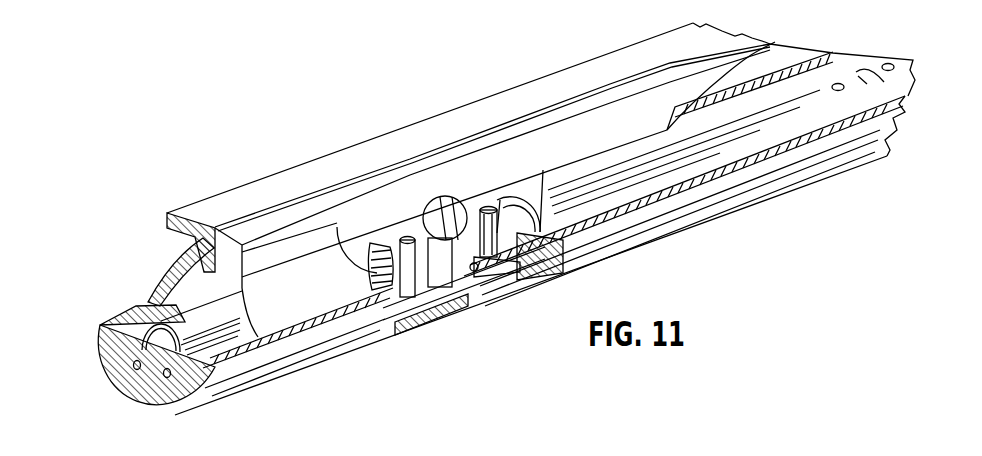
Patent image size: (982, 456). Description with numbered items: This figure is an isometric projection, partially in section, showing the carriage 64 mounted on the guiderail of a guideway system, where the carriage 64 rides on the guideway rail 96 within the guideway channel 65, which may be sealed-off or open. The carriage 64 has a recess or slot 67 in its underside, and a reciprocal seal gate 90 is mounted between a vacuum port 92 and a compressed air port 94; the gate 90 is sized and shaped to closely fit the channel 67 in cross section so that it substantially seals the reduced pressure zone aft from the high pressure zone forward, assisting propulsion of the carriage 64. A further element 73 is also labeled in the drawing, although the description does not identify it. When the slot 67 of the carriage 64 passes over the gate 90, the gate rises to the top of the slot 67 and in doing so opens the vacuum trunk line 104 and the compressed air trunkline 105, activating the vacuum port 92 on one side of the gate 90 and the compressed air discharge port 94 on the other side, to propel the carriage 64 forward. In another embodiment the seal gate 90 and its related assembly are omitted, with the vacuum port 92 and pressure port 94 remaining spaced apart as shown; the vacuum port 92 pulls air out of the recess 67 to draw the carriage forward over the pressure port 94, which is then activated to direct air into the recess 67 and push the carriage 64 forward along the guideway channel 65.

The carriage 64 is at (772, 110).
The guideway channel 65 is at (163, 280).
The channel 67 is at (375, 229).
The pin 73 is at (433, 237).
The seal gate 90 is at (433, 200).
The vacuum port 92 is at (408, 238).
The compressed air port 94 is at (487, 202).
The guideway rail 96 is at (240, 305).
The vacuum trunk line 104 is at (525, 252).
The compressed air trunkline 105 is at (395, 300).